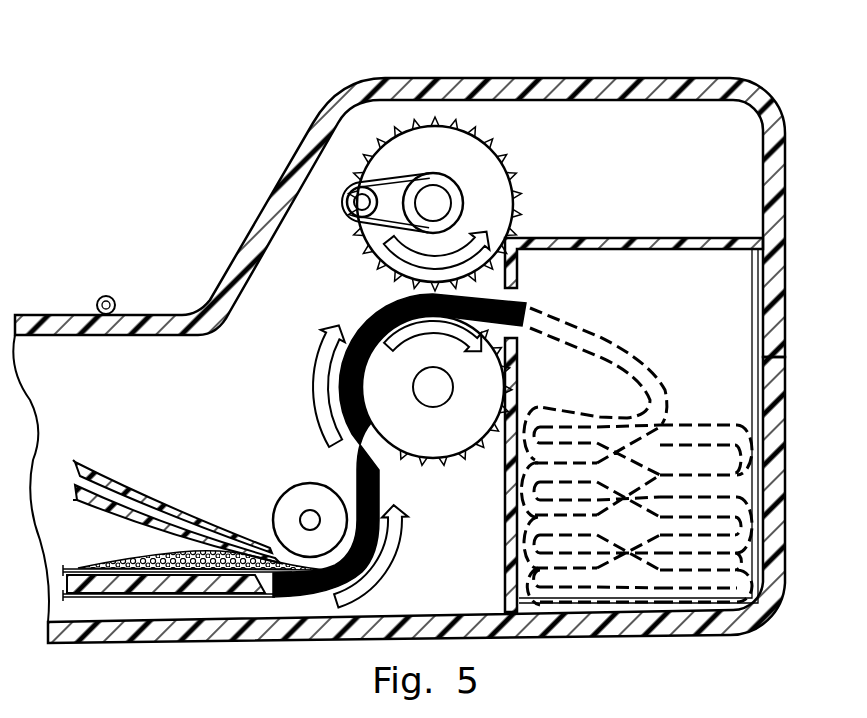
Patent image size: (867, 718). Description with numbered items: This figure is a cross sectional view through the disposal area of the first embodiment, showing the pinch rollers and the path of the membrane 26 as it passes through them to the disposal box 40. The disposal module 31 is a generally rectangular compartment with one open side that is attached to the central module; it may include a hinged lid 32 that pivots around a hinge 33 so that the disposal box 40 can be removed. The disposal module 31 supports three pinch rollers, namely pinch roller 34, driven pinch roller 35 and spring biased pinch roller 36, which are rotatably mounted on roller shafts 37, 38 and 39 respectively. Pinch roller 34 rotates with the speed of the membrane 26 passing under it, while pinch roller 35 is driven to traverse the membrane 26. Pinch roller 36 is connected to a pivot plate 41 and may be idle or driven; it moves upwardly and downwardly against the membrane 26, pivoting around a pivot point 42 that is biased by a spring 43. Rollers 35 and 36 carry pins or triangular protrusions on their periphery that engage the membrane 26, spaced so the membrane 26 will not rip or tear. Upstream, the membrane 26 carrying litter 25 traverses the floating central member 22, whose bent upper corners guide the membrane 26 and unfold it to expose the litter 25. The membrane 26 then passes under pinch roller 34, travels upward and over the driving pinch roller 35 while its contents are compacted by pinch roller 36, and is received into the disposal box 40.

The floating central member 22 is at (110, 597).
The litter 25 is at (217, 597).
The membrane 26 is at (277, 598).
The disposal module 31 is at (790, 590).
The hinged lid 32 is at (787, 190).
The hinge 33 is at (106, 295).
The pinch roller 34 is at (283, 513).
The driven pinch roller 35 is at (452, 427).
The spring biased pinch roller 36 is at (462, 160).
The roller shaft 37 is at (302, 515).
The roller shaft 38 is at (423, 389).
The roller shaft 39 is at (433, 198).
The disposal box 40 is at (602, 238).
The pivot plate 41 is at (370, 175).
The pivot point 42 is at (358, 203).
The spring 43 is at (413, 177).